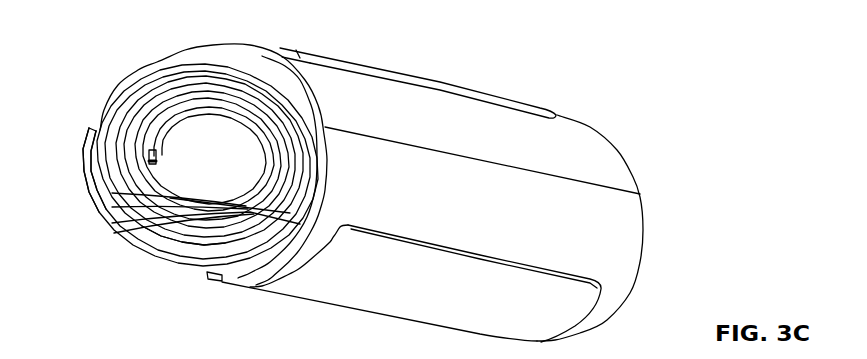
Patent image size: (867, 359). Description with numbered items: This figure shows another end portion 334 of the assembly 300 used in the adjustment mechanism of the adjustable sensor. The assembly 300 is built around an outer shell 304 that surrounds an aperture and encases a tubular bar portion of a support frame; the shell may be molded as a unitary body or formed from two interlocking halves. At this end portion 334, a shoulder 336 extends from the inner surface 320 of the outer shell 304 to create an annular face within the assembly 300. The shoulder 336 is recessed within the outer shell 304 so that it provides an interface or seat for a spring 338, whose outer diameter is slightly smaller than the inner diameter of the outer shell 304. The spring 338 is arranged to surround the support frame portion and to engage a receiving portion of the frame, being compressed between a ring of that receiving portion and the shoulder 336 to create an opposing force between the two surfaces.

The assembly 300 is at (465, 62).
The outer shell 304 is at (211, 46).
The inner surface 320 is at (180, 168).
The end portion 334 is at (250, 30).
The shoulder 336 is at (176, 195).
The spring 338 is at (124, 85).